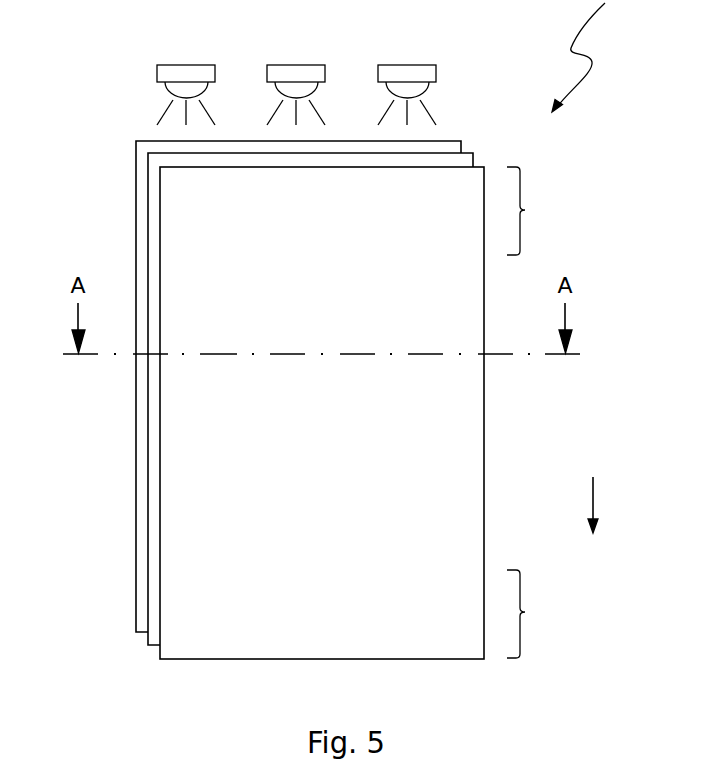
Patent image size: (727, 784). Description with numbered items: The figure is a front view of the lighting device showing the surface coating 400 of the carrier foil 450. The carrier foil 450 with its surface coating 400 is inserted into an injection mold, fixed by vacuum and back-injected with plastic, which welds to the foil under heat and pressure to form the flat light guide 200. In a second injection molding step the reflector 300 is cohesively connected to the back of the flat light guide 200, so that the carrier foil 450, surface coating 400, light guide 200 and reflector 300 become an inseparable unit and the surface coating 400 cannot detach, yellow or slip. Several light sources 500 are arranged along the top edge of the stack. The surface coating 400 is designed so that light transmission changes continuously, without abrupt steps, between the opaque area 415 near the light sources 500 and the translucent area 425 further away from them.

The light source 500 is at (186, 72).
The reflector 300 is at (143, 178).
The flat light guide 200 is at (155, 223).
The surface coating 400 is at (322, 413).
The carrier foil 450 is at (360, 315).
The opaque area 415 is at (525, 210).
The translucent area 425 is at (525, 612).